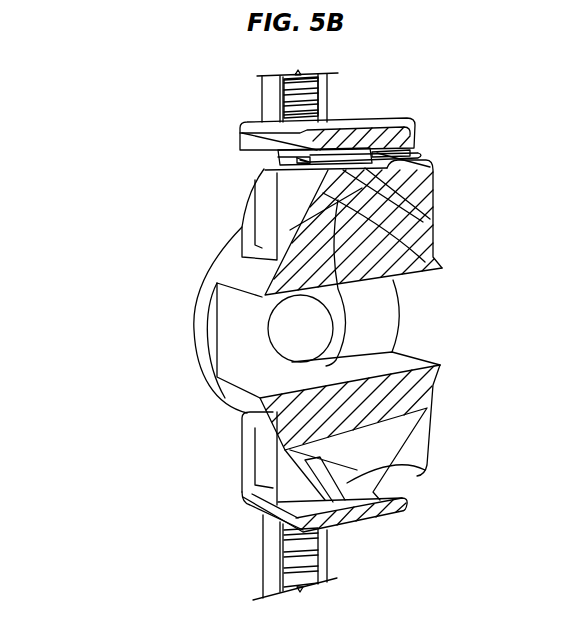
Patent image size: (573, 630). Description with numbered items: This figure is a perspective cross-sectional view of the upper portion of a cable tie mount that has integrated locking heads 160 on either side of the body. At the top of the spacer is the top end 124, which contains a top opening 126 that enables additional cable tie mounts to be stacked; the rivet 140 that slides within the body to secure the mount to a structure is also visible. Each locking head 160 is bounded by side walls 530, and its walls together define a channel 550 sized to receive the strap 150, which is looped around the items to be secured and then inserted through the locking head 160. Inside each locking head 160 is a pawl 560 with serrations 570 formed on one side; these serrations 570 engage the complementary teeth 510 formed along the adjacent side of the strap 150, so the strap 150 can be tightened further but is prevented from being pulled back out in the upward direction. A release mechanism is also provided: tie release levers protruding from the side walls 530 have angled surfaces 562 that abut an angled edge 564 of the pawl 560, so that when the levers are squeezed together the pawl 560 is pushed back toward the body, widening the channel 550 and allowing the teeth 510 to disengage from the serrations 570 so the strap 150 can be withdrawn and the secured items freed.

The top end 124 is at (197, 293).
The top opening 126 is at (285, 318).
The rivet 140 is at (430, 320).
The strap 150 is at (271, 97).
The locking head 160 is at (150, 192).
The teeth 510 is at (307, 97).
The side walls 530 is at (260, 193).
The channel 550 is at (386, 152).
The pawl 560 is at (428, 254).
The angled surfaces 562 is at (398, 209).
The angled edge 564 is at (400, 158).
The serrations 570 is at (300, 156).